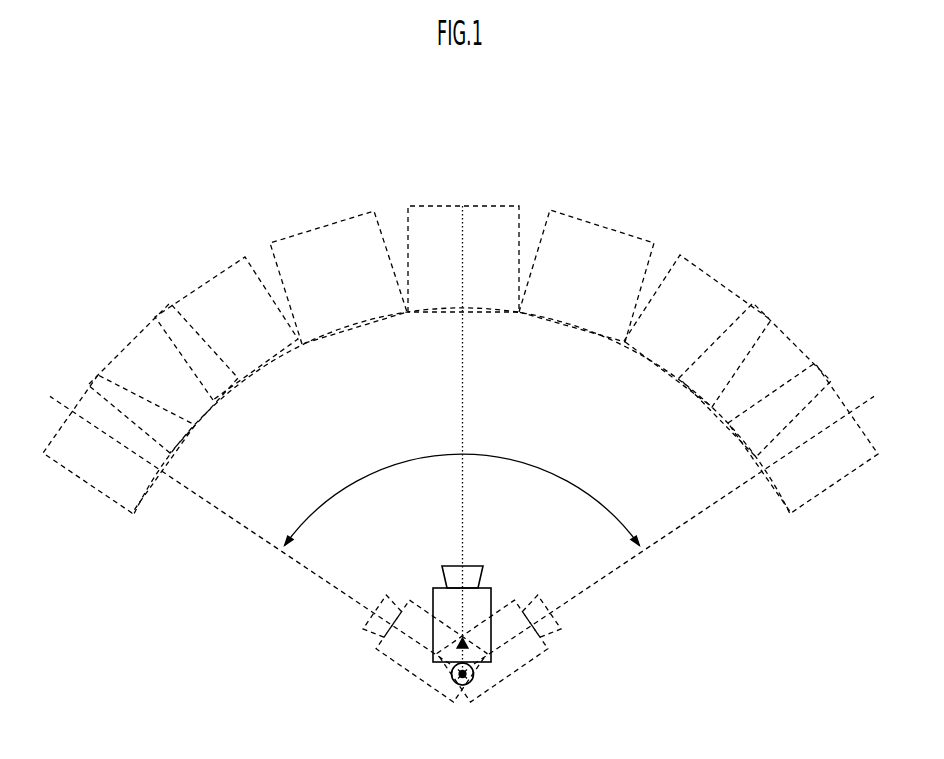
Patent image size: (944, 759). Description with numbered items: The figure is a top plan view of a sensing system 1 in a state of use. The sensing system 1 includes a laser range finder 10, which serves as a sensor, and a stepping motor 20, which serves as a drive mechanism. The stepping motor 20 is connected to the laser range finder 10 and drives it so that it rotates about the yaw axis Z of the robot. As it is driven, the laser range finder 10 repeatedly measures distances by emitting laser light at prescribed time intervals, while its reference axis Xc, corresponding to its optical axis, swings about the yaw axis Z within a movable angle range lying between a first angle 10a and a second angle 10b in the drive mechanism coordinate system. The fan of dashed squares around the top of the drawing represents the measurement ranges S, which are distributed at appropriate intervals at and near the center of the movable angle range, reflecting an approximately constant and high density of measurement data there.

The sensing system 1 is at (580, 619).
The laser range finder 10 is at (445, 585).
The first angle 10a is at (244, 516).
The second angle 10b is at (681, 513).
The stepping motor 20 is at (462, 686).
The measurement ranges S is at (562, 208).
The reference axis Xc is at (463, 385).
The yaw axis Z is at (475, 682).